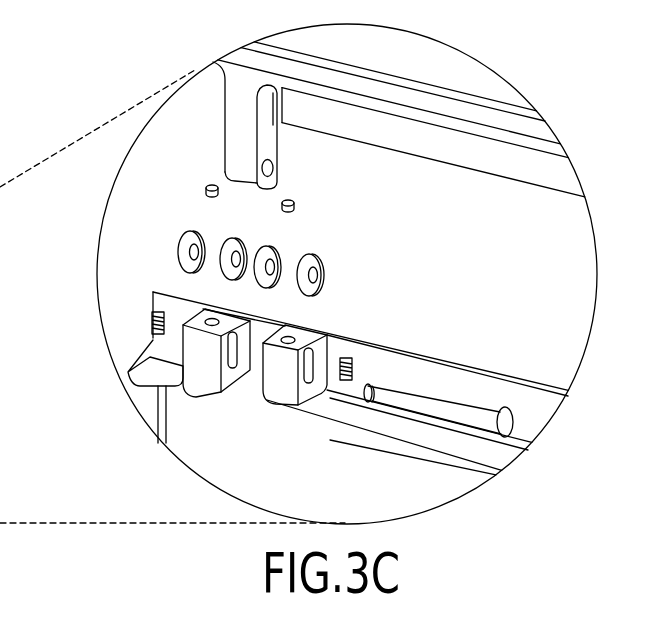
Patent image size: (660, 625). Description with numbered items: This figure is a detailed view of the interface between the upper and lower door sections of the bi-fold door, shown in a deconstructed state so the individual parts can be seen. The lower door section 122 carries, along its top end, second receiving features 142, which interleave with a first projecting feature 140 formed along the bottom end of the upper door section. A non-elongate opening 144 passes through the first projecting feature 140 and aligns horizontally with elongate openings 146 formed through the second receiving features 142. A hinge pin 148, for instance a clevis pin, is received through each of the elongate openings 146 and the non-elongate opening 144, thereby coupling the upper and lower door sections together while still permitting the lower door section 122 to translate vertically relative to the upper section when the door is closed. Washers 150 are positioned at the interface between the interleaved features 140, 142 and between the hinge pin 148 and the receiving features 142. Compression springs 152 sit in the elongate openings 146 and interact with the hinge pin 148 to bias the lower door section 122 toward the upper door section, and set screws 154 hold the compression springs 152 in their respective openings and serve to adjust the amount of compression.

The lower door section 122 is at (418, 495).
The first projecting feature 140 is at (240, 152).
The second receiving features 142 is at (278, 395).
The non-elongate opening 144 is at (276, 173).
The elongate openings 146 is at (313, 355).
The hinge pin 148 is at (440, 403).
The washers 150 is at (323, 268).
The compression springs 152 is at (152, 318).
The set screws 154 is at (296, 210).